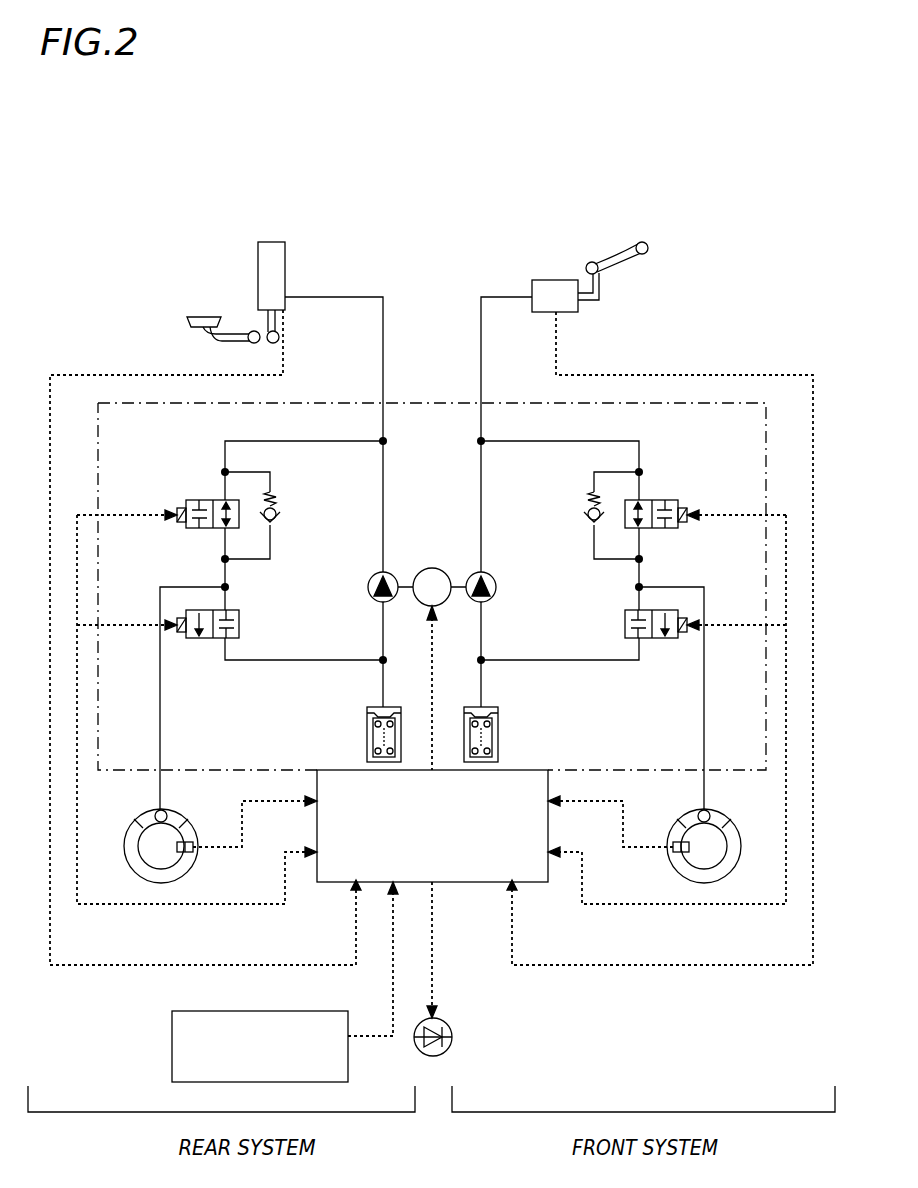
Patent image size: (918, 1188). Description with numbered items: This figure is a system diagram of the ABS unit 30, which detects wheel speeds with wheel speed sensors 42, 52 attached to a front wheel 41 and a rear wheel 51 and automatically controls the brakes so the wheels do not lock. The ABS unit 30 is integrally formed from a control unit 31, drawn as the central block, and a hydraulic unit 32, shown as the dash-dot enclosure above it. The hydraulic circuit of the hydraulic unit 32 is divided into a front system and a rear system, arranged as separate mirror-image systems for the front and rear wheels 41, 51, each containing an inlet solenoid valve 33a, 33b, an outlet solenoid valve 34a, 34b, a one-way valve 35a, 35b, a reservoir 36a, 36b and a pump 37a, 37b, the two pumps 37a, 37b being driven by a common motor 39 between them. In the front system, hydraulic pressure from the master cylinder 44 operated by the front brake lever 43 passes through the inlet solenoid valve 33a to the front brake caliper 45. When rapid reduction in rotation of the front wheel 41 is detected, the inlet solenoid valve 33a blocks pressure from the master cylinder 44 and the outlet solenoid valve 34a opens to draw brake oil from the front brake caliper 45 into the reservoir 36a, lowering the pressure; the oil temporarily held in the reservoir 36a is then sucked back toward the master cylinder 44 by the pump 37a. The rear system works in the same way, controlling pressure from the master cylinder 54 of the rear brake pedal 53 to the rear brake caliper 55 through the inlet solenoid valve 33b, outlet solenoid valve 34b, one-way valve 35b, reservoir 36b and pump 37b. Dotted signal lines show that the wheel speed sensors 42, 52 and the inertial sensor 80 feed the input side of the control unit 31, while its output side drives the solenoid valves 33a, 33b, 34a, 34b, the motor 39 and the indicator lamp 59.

The ABS unit 30 is at (420, 394).
The control unit 31 is at (530, 770).
The hydraulic unit 32 is at (530, 401).
The inlet solenoid valve 33a is at (657, 500).
The inlet solenoid valve 33b is at (205, 499).
The outlet solenoid valve 34a is at (628, 610).
The outlet solenoid valve 34b is at (232, 610).
The one-way valve 35a is at (592, 492).
The one-way valve 35b is at (272, 492).
The reservoir 36a is at (484, 707).
The reservoir 36b is at (370, 707).
The pump 37a is at (494, 575).
The pump 37b is at (371, 574).
The motor 39 is at (435, 568).
The front wheel 41 is at (738, 833).
The wheel speed sensor 42 is at (680, 853).
The front brake lever 43 is at (630, 270).
The master cylinder 44 is at (553, 280).
The front brake caliper 45 is at (714, 810).
The rear wheel 51 is at (128, 833).
The wheel speed sensor 52 is at (185, 853).
The rear brake pedal 53 is at (205, 316).
The master cylinder 54 is at (270, 242).
The rear brake caliper 55 is at (152, 810).
The indicator lamp 59 is at (446, 1022).
The inertial sensor 80 is at (192, 1011).